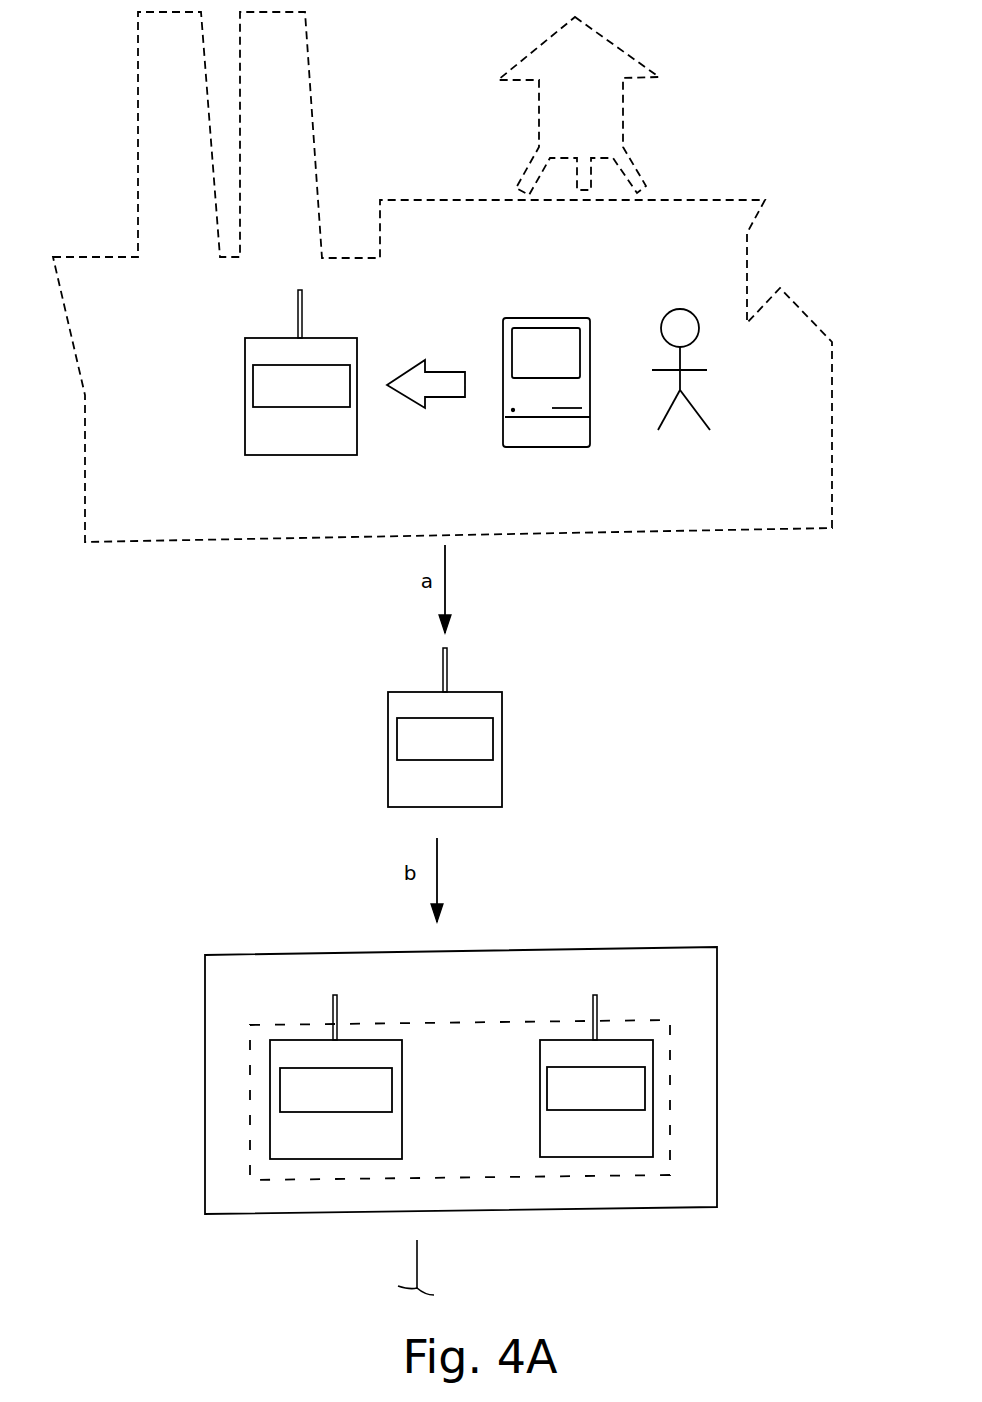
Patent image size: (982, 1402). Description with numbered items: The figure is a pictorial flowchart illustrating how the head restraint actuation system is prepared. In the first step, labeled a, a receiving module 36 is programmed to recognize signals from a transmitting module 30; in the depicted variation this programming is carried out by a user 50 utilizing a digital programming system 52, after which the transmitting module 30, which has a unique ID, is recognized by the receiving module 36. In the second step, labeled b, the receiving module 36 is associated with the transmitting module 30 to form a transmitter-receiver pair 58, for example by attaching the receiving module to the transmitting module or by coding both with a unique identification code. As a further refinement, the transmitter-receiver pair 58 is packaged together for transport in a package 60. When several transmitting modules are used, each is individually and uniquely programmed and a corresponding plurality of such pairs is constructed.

The transmitting module 30 is at (303, 1037).
The receiving module 36 is at (245, 347).
The user 50 is at (700, 313).
The digital programming system 52 is at (552, 318).
The transmitter-receiver pair 58 is at (240, 1089).
The package 60 is at (555, 948).